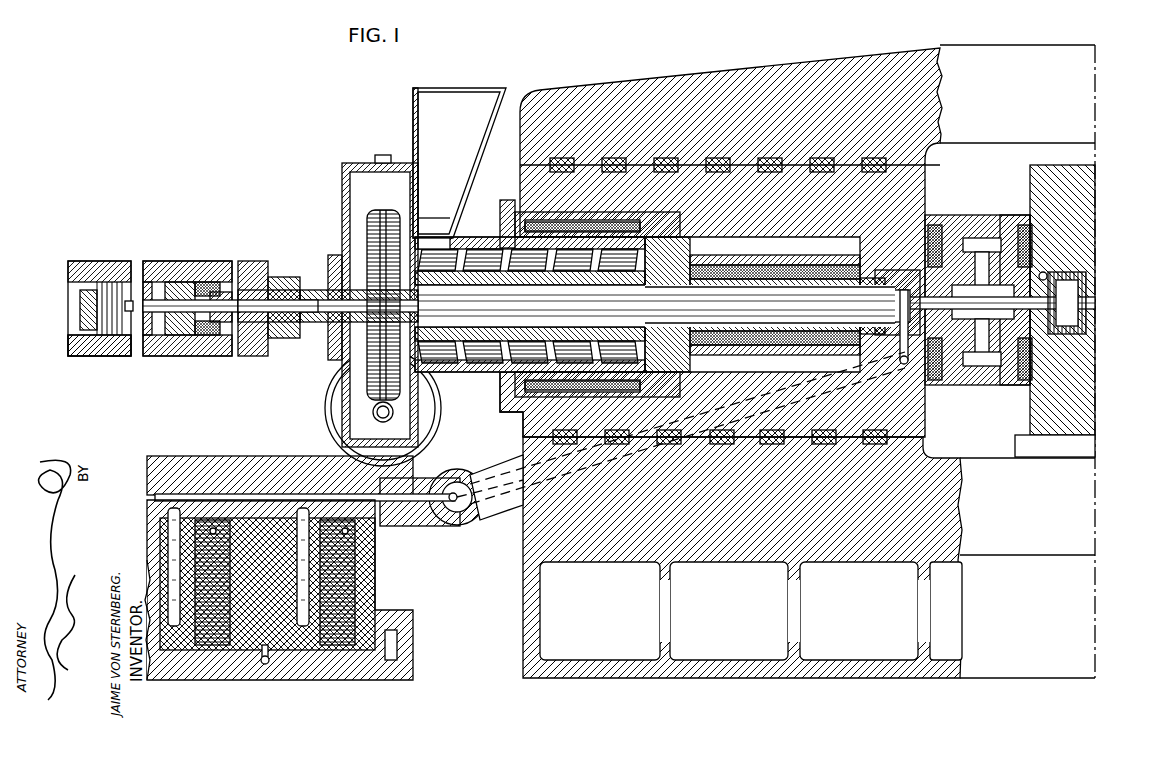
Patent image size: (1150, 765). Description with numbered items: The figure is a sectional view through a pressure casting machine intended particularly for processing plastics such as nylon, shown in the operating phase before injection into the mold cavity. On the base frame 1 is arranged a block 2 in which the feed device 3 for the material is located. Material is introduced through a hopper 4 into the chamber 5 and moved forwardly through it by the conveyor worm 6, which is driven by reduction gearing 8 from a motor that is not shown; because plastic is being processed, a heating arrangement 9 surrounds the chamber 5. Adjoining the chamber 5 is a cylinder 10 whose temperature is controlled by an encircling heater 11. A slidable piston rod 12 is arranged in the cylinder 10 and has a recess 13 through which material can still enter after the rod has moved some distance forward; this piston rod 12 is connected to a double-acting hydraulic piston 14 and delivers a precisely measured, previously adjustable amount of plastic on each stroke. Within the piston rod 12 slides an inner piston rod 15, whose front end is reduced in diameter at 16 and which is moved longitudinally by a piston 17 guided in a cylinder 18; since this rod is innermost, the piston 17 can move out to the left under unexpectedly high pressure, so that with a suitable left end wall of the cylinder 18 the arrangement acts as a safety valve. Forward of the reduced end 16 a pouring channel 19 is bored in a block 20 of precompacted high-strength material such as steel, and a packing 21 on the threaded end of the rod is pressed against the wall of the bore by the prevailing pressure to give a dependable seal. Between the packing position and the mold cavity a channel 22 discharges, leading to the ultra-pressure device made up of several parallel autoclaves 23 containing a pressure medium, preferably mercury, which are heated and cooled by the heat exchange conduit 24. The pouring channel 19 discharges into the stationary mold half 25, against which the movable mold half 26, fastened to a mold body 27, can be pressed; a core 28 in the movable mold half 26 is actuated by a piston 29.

The base frame 1 is at (950, 532).
The block 2 is at (923, 424).
The feed device 3 is at (340, 194).
The hopper 4 is at (456, 98).
The chamber 5 is at (480, 240).
The conveyor worm 6 is at (468, 372).
The reduction gearing 8 is at (372, 412).
The heating arrangement 9 is at (500, 388).
The cylinder 10 is at (838, 262).
The heater 11 is at (800, 332).
The piston rod 12 is at (764, 265).
The recess 13 is at (716, 266).
The piston 14 is at (212, 268).
The piston rod 15 is at (560, 300).
The reduced end 16 is at (900, 322).
The piston 17 is at (76, 332).
The cylinder 18 is at (116, 356).
The pouring channel 19 is at (896, 276).
The block 20 is at (964, 240).
The packing 21 is at (872, 268).
The channel 22 is at (232, 494).
The autoclaves 23 is at (312, 655).
The heat exchange conduit 24 is at (264, 665).
The stationary mold half 25 is at (975, 385).
The movable mold half 26 is at (1010, 385).
The mold body 27 is at (1068, 455).
The core 28 is at (1016, 240).
The piston 29 is at (1098, 278).